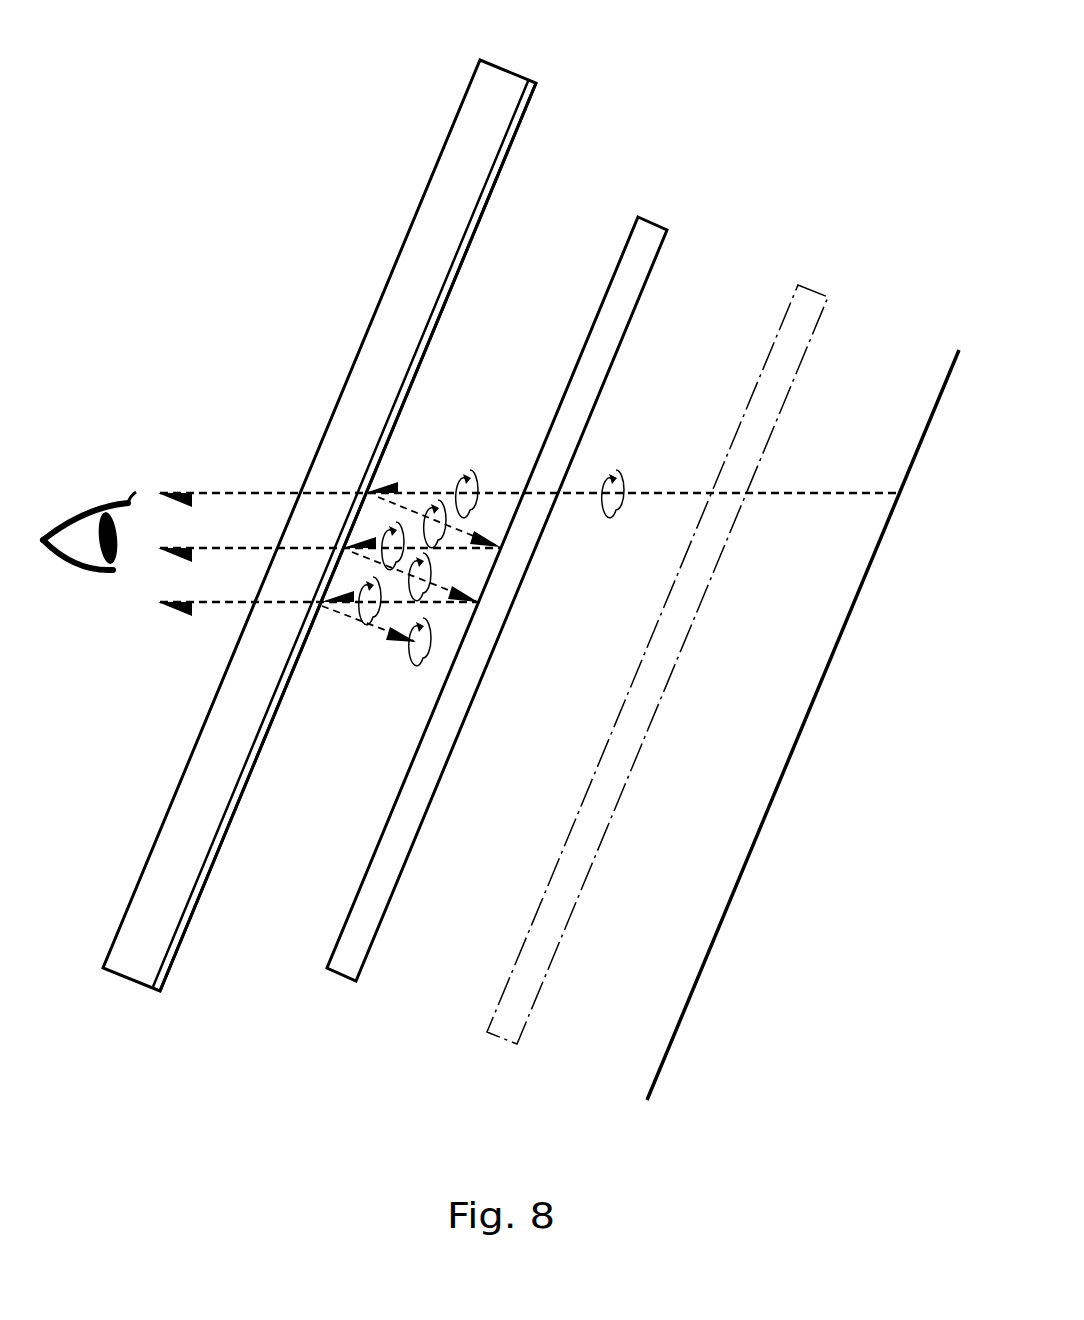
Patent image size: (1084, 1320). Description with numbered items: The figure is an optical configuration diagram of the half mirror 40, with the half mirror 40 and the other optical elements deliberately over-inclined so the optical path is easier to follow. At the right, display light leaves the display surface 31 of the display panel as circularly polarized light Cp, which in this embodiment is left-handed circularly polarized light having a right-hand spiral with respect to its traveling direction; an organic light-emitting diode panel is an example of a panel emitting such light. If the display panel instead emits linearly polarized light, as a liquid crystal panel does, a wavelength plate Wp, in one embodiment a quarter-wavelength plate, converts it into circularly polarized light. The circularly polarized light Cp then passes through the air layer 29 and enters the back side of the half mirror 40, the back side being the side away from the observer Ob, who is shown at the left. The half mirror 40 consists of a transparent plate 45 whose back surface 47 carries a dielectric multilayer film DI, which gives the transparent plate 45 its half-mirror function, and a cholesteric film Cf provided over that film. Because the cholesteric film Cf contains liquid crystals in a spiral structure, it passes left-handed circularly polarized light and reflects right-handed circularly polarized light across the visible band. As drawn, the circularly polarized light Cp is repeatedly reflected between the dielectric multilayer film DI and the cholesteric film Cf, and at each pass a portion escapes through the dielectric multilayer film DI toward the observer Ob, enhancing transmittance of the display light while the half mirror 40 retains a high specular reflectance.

The air layer 29 is at (795, 208).
The display surface 31 is at (788, 760).
The half mirror 40 is at (318, 1072).
The transparent plate 45 is at (508, 68).
The back surface 47 is at (480, 200).
The dielectric multilayer film DI is at (525, 123).
The cholesteric film Cf is at (340, 968).
The circularly polarized light Cp is at (677, 493).
The wavelength plate Wp is at (502, 1035).
The observer Ob is at (78, 560).